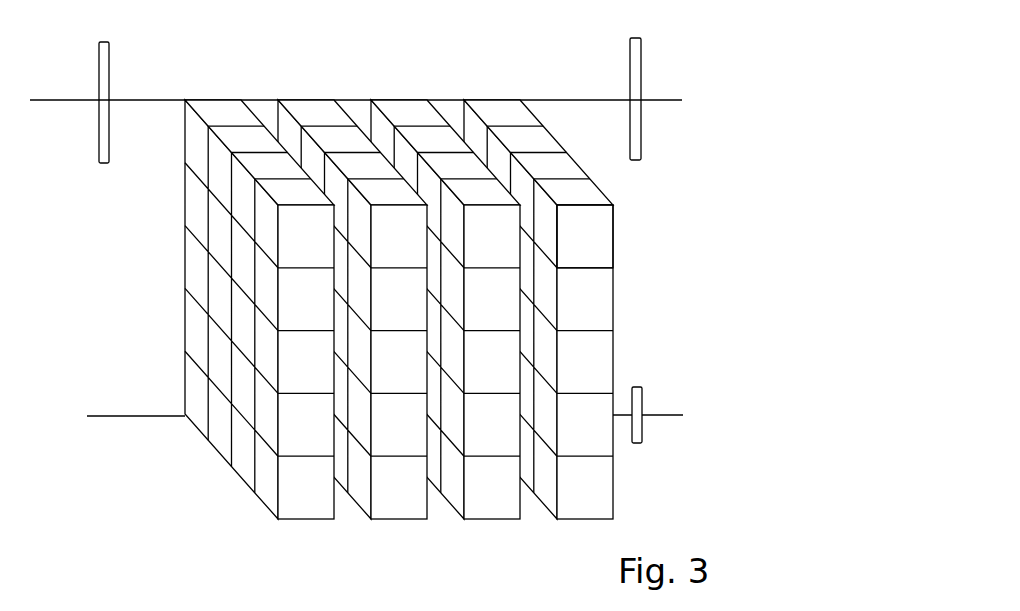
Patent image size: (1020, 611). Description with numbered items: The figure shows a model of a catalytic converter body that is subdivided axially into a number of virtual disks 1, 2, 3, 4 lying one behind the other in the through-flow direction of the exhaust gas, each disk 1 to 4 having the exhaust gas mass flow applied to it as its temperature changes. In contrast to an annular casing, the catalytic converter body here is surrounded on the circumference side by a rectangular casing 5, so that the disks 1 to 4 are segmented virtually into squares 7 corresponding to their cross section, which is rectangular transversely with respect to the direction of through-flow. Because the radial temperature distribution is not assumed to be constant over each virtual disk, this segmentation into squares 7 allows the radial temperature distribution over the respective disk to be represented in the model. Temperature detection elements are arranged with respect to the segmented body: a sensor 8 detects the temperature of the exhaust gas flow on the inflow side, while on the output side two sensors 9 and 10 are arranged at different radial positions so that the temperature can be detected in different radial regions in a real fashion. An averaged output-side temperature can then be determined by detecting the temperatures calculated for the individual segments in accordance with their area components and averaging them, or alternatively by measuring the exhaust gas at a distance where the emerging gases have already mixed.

The disk 1 is at (209, 80).
The disk 2 is at (316, 80).
The disk 3 is at (400, 79).
The disk 4 is at (507, 79).
The casing 5 is at (578, 93).
The square 7 is at (597, 244).
The sensor 8 is at (103, 135).
The sensor 9 is at (636, 132).
The sensor 10 is at (634, 398).